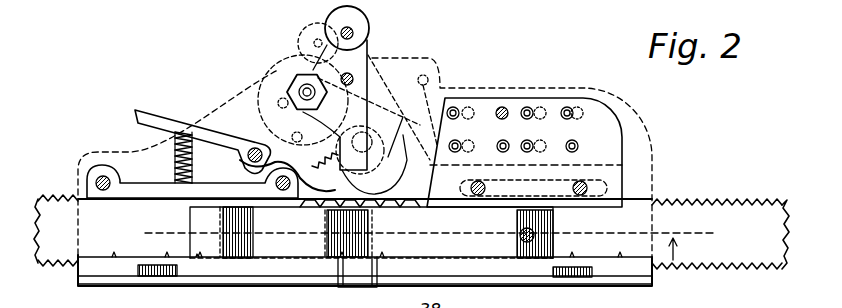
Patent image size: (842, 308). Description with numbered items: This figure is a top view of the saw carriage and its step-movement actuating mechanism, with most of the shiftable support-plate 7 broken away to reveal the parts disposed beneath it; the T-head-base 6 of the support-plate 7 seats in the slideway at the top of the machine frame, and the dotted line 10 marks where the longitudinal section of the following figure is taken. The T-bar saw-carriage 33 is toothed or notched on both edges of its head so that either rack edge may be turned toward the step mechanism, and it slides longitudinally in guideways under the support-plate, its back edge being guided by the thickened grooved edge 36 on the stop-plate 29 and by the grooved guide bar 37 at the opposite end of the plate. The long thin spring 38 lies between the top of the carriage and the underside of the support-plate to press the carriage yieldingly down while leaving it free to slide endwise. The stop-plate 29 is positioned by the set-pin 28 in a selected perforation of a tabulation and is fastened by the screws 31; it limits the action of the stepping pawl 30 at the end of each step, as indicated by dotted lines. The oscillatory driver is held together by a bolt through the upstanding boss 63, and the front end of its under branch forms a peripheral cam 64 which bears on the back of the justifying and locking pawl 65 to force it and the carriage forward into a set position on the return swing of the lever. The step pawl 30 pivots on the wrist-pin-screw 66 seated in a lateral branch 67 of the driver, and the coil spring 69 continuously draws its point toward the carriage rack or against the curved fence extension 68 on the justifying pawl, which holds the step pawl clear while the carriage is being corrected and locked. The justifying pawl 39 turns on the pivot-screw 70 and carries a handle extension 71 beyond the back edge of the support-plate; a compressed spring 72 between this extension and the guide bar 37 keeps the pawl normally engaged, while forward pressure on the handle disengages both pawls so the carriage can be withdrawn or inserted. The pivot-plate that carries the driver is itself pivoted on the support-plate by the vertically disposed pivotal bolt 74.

The T-head-base 6 is at (633, 270).
The support-plate 7 is at (640, 283).
The dotted line 10 is at (432, 242).
The set-pin 28 is at (503, 107).
The stop-plate 29 is at (524, 152).
The step pawl 30 is at (406, 127).
The screws 31 is at (573, 188).
The T-bar saw-carriage 33 is at (718, 220).
The thickened grooved edge 36 is at (622, 190).
The grooved guide bar 37 is at (140, 193).
The long thin spring 38 is at (208, 220).
The justifying pawl 39 is at (345, 185).
The upstanding boss 63 is at (355, 27).
The peripheral cam 64 is at (352, 175).
The justifying and locking pawl 65 is at (300, 190).
The wrist-pin-screw 66 is at (298, 80).
The lateral branch 67 is at (312, 70).
The curved fence extension 68 is at (432, 200).
The coil spring 69 is at (322, 149).
The pivot-screw 70 is at (249, 157).
The handle extension 71 is at (155, 118).
The compressed spring 72 is at (175, 160).
The pivotal bolt 74 is at (423, 80).